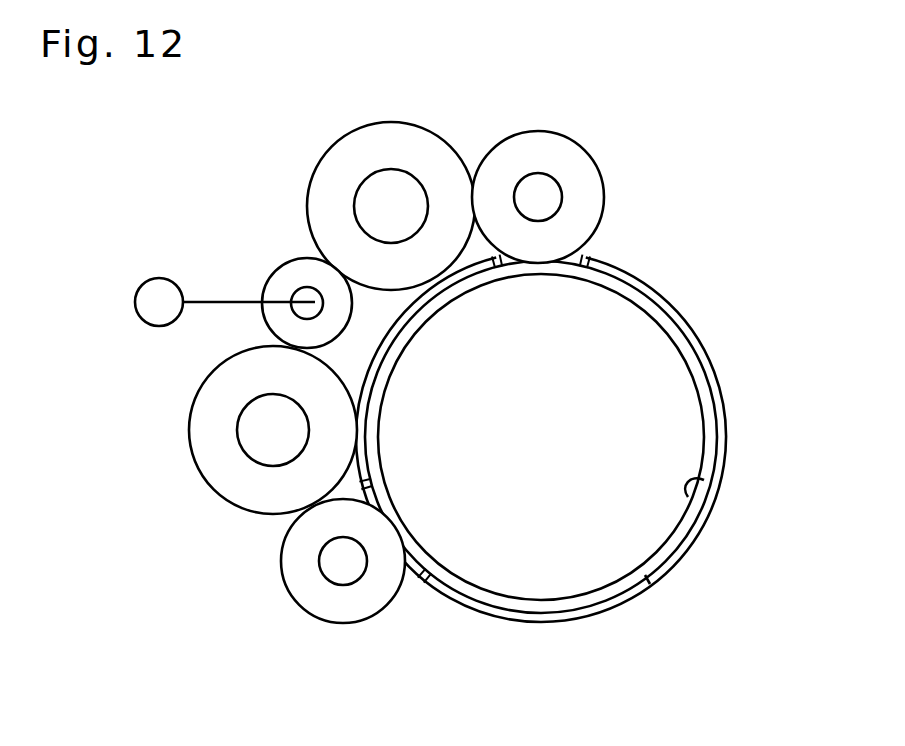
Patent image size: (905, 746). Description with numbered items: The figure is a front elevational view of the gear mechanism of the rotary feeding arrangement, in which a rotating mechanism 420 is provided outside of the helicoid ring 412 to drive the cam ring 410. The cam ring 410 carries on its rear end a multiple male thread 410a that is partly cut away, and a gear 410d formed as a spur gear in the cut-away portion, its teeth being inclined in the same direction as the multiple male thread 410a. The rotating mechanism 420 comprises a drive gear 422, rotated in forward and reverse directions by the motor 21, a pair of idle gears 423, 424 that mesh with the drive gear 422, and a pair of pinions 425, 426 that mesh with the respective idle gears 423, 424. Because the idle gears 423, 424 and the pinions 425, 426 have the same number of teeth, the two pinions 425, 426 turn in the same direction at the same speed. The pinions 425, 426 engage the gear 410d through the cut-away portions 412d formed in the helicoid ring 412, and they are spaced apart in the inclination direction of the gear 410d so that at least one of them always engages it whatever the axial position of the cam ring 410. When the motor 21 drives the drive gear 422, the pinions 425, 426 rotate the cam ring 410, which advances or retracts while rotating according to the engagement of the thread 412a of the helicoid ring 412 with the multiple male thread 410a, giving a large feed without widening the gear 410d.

The rotating mechanism 420 is at (368, 103).
The cam ring 410 is at (692, 375).
The multiple male thread 410a is at (647, 580).
The gear 410d is at (578, 262).
The helicoid ring 412 is at (717, 382).
The thread 412a is at (698, 505).
The cut-away portions 412d is at (507, 270).
The motor 21 is at (150, 278).
The drive gear 422 is at (293, 273).
The idle gear 423 is at (225, 472).
The idle gear 424 is at (335, 180).
The pinion 425 is at (307, 583).
The pinion 426 is at (570, 157).